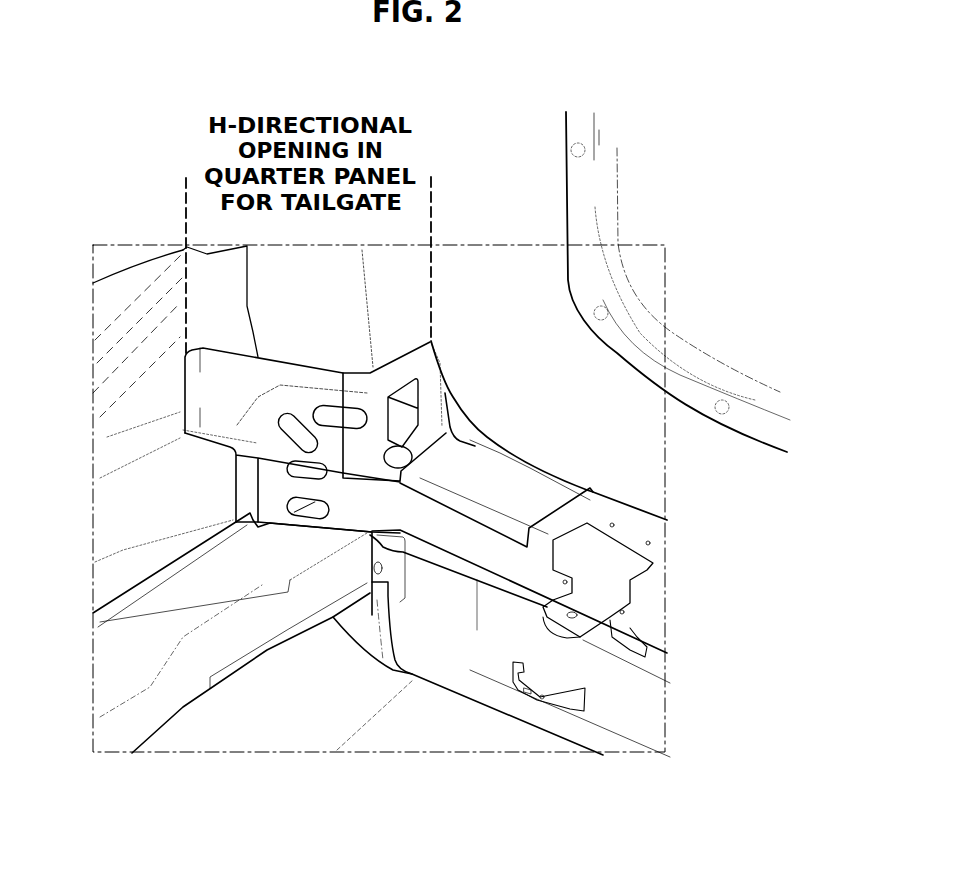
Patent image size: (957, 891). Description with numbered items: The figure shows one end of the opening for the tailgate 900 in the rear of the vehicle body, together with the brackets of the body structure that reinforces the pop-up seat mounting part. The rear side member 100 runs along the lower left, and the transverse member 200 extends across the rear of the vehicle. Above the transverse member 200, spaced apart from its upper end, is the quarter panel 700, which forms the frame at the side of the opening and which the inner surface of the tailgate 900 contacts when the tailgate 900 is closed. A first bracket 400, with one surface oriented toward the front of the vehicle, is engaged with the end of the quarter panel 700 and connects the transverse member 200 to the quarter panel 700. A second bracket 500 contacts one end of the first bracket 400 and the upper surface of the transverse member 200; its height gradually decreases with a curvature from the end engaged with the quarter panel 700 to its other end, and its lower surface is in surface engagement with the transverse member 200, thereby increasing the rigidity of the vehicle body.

The rear side member 100 is at (170, 687).
The transverse member 200 is at (447, 523).
The first bracket 400 is at (213, 402).
The second bracket 500 is at (477, 467).
The quarter panel 700 is at (392, 292).
The tailgate 900 is at (740, 413).